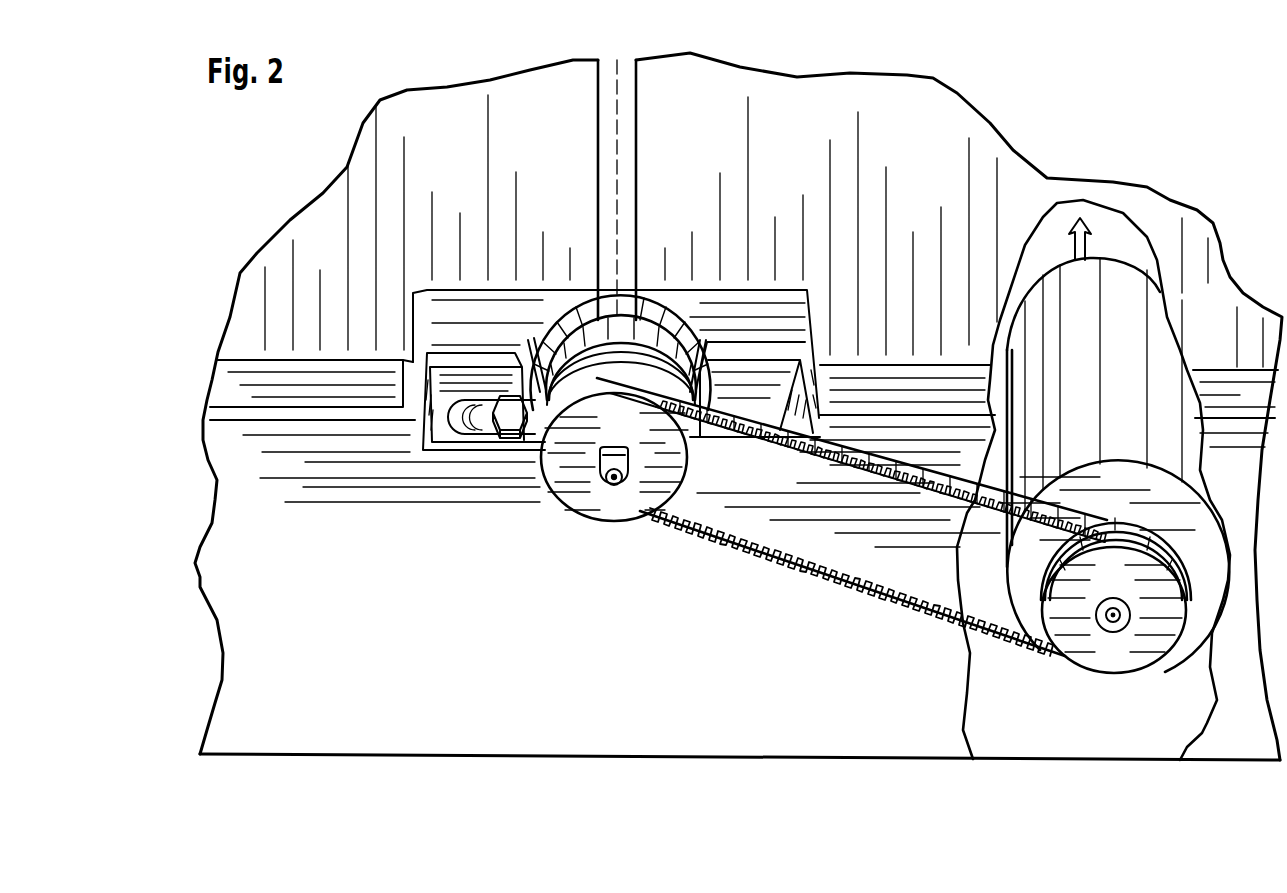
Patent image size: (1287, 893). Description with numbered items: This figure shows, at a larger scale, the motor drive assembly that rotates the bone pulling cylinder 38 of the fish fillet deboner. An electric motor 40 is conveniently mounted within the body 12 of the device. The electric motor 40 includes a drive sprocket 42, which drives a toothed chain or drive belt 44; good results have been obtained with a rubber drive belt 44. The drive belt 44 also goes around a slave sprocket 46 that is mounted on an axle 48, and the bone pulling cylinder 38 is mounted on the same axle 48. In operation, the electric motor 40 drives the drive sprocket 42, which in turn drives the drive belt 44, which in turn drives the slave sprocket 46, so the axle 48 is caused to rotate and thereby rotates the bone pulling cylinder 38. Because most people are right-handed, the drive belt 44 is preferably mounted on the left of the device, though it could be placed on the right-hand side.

The body 12 is at (730, 757).
The bone pulling cylinder 38 is at (623, 240).
The electric motor 40 is at (1123, 343).
The drive sprocket 42 is at (1090, 650).
The drive belt 44 is at (807, 575).
The slave sprocket 46 is at (560, 483).
The axle 48 is at (610, 486).